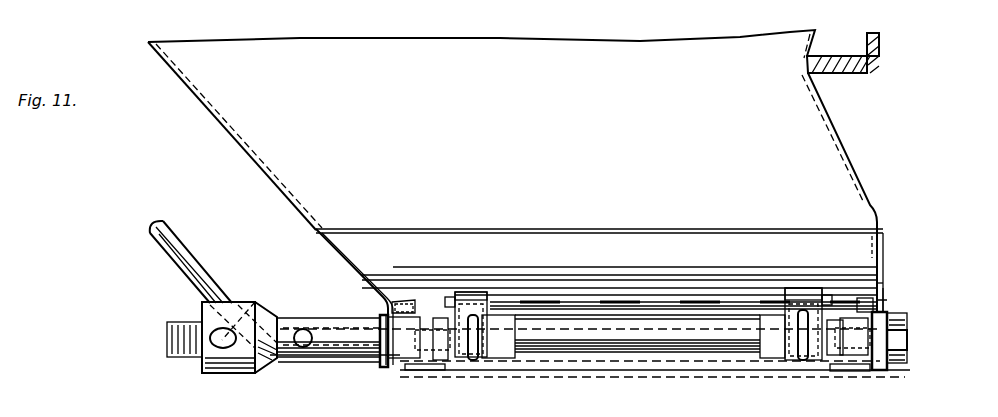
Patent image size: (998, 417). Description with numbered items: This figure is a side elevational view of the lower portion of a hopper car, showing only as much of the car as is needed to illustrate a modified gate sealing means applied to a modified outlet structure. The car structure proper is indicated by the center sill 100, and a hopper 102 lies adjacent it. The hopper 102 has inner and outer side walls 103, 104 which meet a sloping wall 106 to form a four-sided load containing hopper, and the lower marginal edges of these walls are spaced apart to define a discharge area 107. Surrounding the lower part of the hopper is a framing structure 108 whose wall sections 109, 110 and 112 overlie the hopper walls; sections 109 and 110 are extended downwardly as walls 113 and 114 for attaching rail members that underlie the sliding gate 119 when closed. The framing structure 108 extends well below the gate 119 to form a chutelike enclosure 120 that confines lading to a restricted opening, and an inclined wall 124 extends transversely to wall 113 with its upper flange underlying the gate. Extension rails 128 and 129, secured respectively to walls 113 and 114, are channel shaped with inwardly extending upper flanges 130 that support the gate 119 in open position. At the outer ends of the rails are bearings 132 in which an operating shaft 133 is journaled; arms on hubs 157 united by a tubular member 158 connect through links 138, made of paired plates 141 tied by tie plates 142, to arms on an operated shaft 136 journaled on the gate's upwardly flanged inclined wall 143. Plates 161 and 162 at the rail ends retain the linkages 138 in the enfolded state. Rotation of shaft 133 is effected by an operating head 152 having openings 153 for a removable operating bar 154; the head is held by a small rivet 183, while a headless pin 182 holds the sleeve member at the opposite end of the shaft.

The center sill 100 is at (881, 66).
The hopper 102 is at (214, 137).
The inner side wall 103 is at (836, 118).
The outer side wall 104 is at (268, 175).
The sloping wall 106 is at (528, 135).
The discharge area 107 is at (624, 258).
The framing structure 108 is at (889, 203).
The wall section 109 is at (885, 232).
The wall section 110 is at (318, 233).
The wall section 112 is at (700, 250).
The downward wall extension 113 is at (885, 293).
The downward wall extension 114 is at (386, 303).
The sliding gate 119 is at (652, 274).
The chutelike enclosure 120 is at (893, 254).
The inclined wall 124 is at (562, 362).
The extension rail 128 is at (886, 282).
The extension rail 129 is at (396, 300).
The upper flange 130 is at (406, 300).
The bearing 132 is at (383, 352).
The operating shaft 133 is at (683, 338).
The operated shaft 136 is at (662, 302).
The link 138 is at (487, 292).
The plate 141 is at (472, 313).
The tie plate 142 is at (455, 302).
The inclined wall 143 is at (581, 292).
The operating head 152 is at (236, 381).
The opening 153 is at (232, 327).
The operating bar 154 is at (150, 240).
The hub 157 is at (497, 358).
The tubular member 158 is at (622, 340).
The plate 161 is at (440, 362).
The plate 162 is at (416, 354).
The headless pin 182 is at (887, 322).
The rivet 183 is at (300, 348).